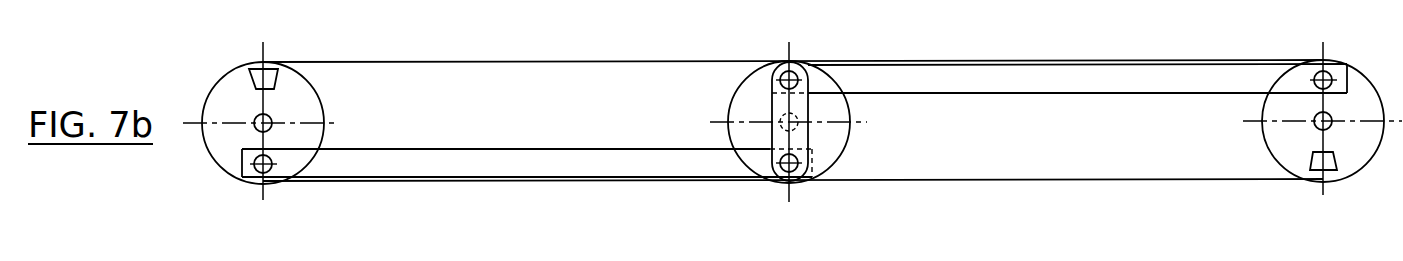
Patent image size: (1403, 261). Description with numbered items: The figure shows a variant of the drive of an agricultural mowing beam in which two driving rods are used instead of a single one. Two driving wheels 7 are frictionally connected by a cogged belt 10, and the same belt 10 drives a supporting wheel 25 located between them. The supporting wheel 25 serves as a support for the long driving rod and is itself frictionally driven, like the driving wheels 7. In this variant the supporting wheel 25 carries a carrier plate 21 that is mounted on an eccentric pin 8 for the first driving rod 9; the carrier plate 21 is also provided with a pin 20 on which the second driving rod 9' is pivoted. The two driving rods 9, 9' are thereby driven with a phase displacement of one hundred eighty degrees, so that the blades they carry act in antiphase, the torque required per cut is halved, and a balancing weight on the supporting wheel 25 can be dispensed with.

The driving wheel 7 is at (215, 101).
The eccentric pin 8 is at (795, 62).
The first driving rod 9 is at (1059, 101).
The second driving rod 9' is at (527, 142).
The cogged belt 10 is at (608, 62).
The pin 20 is at (795, 180).
The carrier plate 21 is at (777, 103).
The supporting wheel 25 is at (735, 135).